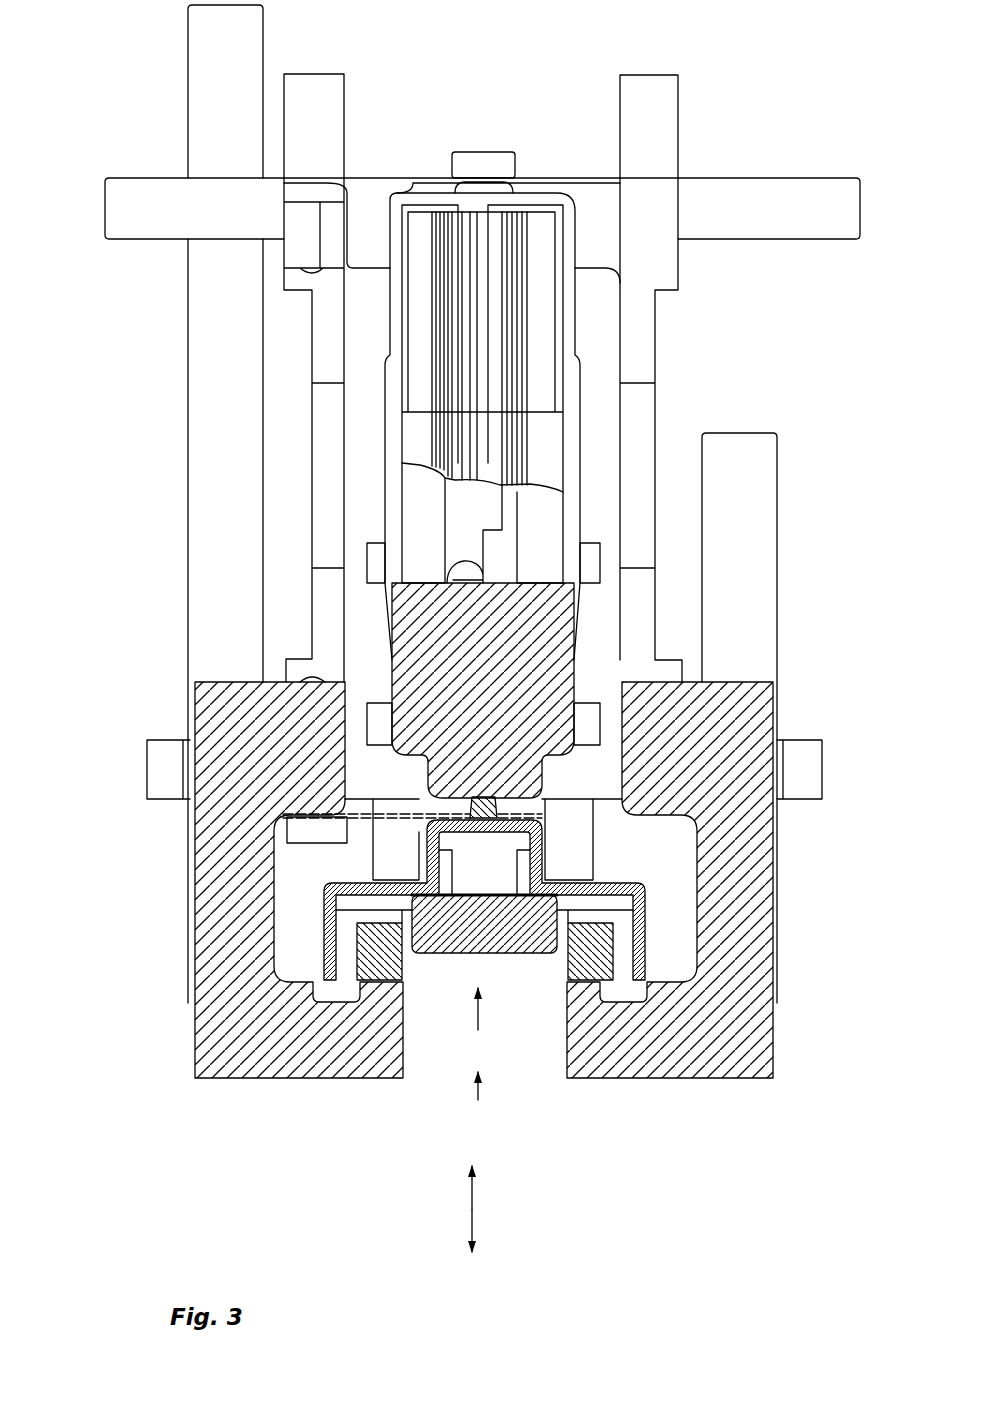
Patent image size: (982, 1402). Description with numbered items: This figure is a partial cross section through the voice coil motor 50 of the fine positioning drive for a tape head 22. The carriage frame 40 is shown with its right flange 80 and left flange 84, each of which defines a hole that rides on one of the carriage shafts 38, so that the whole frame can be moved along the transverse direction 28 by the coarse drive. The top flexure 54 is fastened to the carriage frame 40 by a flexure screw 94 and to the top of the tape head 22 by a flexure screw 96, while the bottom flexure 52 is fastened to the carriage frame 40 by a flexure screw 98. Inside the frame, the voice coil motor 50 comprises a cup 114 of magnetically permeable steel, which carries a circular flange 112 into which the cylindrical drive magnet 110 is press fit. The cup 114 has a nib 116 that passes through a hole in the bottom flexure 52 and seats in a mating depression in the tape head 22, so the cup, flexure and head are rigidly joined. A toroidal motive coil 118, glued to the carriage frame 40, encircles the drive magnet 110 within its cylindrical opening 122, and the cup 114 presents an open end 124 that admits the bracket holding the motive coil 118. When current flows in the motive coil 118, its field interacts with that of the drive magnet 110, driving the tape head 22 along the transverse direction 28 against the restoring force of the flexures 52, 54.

The carriage shaft 38 is at (187, 52).
The left flange 84 is at (133, 178).
The flexure screw 94 is at (317, 177).
The flexure screw 96 is at (474, 152).
The top flexure 54 is at (360, 175).
The tape head 22 is at (527, 217).
The right flange 80 is at (797, 800).
The voice coil motor 50 is at (418, 880).
The carriage frame 40 is at (195, 1040).
The flexure screw 98 is at (303, 842).
The bottom flexure 52 is at (363, 817).
The nib 116 is at (498, 803).
The cup 114 is at (640, 885).
The drive magnet 110 is at (500, 955).
The circular flange 112 is at (407, 927).
The motive coil 118 is at (567, 963).
The cylindrical opening 122 is at (478, 1030).
The open end 124 is at (478, 1100).
The transverse direction 28 is at (472, 1213).